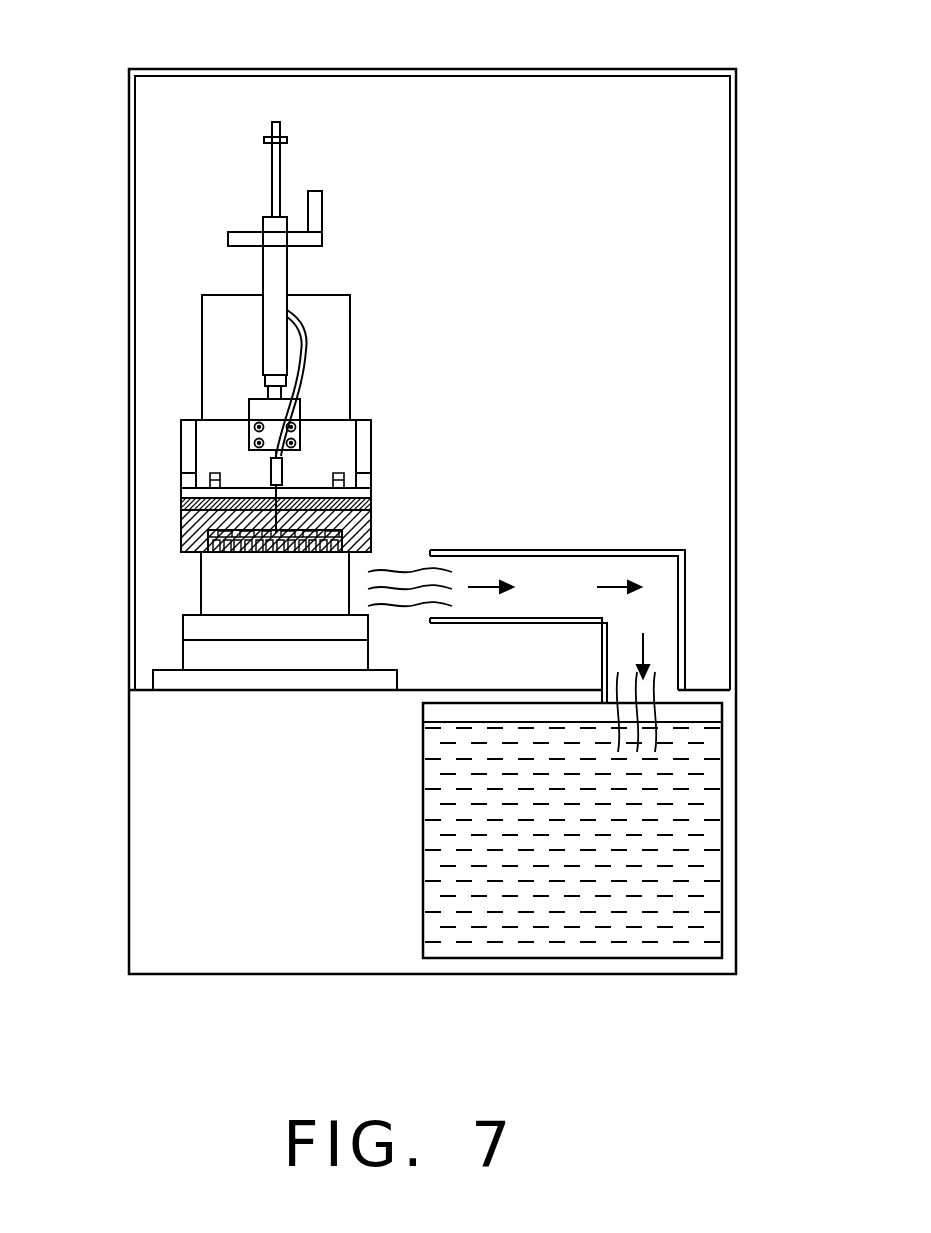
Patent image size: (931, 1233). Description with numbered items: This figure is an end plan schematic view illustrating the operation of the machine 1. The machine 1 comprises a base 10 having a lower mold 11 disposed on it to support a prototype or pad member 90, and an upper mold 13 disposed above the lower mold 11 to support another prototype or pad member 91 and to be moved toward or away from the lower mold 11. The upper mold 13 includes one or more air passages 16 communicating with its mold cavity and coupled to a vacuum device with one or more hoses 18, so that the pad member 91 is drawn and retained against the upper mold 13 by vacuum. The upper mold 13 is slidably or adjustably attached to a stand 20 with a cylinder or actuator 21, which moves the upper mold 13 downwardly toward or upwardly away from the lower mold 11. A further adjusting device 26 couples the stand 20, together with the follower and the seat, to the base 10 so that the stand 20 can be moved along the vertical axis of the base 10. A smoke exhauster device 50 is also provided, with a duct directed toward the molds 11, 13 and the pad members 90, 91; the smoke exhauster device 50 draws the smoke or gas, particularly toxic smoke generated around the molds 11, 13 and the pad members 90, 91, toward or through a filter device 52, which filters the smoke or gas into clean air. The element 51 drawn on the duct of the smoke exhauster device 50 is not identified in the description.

The machine 1 is at (713, 198).
The base 10 is at (143, 830).
The lower mold 11 is at (213, 588).
The upper mold 13 is at (182, 497).
The air passage 16 is at (250, 500).
The hose 18 is at (307, 342).
The stand 20 is at (213, 338).
The cylinder or actuator 21 is at (279, 284).
The adjusting device 26 is at (250, 236).
The smoke exhauster device 50 is at (712, 540).
The duct wall 51 is at (563, 553).
The filter device 52 is at (692, 873).
The pad member 90 is at (218, 557).
The pad member 91 is at (213, 548).